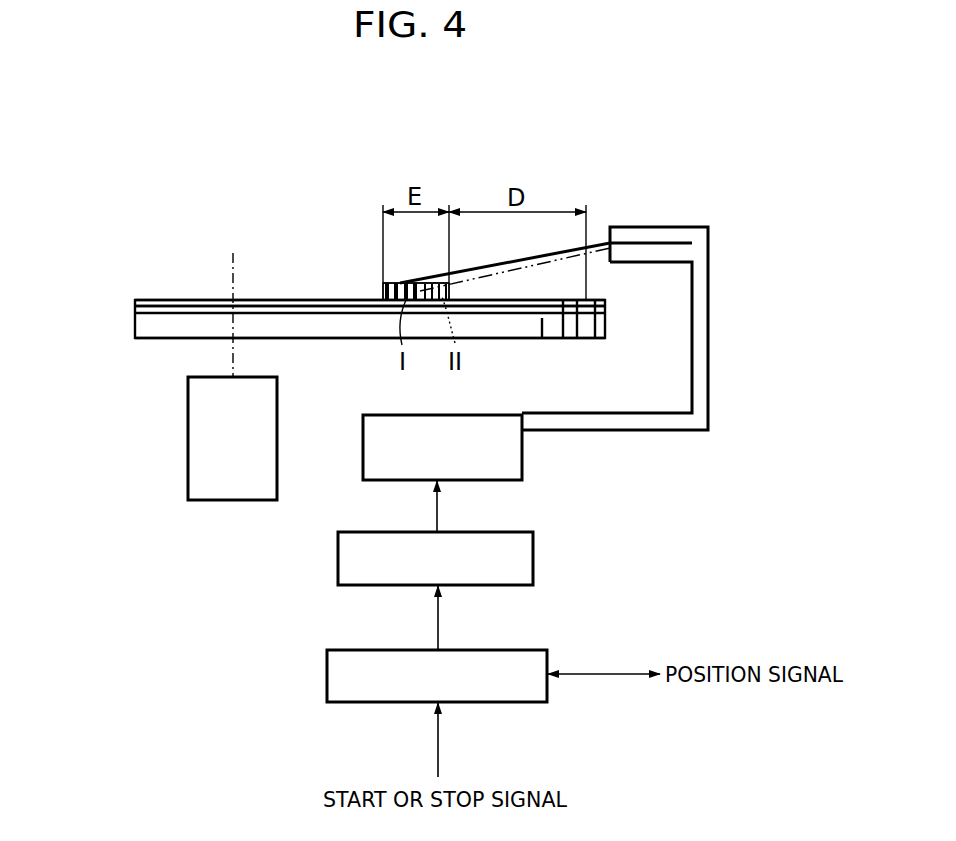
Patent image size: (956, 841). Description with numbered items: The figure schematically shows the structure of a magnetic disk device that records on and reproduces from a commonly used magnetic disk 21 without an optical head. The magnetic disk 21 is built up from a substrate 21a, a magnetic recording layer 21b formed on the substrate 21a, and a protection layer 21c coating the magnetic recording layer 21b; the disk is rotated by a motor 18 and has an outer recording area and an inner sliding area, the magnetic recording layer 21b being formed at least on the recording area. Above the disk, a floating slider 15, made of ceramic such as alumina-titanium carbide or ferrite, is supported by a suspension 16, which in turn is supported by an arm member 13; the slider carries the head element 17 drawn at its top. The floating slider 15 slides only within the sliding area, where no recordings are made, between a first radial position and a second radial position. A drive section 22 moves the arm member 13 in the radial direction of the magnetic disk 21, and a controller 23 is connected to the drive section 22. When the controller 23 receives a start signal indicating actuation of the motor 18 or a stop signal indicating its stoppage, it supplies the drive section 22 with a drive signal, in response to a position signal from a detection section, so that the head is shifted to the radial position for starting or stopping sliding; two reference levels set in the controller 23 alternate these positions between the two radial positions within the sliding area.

The arm member 13 is at (708, 335).
The floating slider 15 is at (383, 291).
The suspension 16 is at (517, 257).
The head gap 17 is at (397, 283).
The motor 18 is at (197, 477).
The magnetic disk 21 is at (172, 347).
The substrate 21a is at (140, 328).
The magnetic recording layer 21b is at (136, 311).
The protection layer 21c is at (142, 302).
The drive section 22 is at (537, 553).
The controller 23 is at (515, 650).